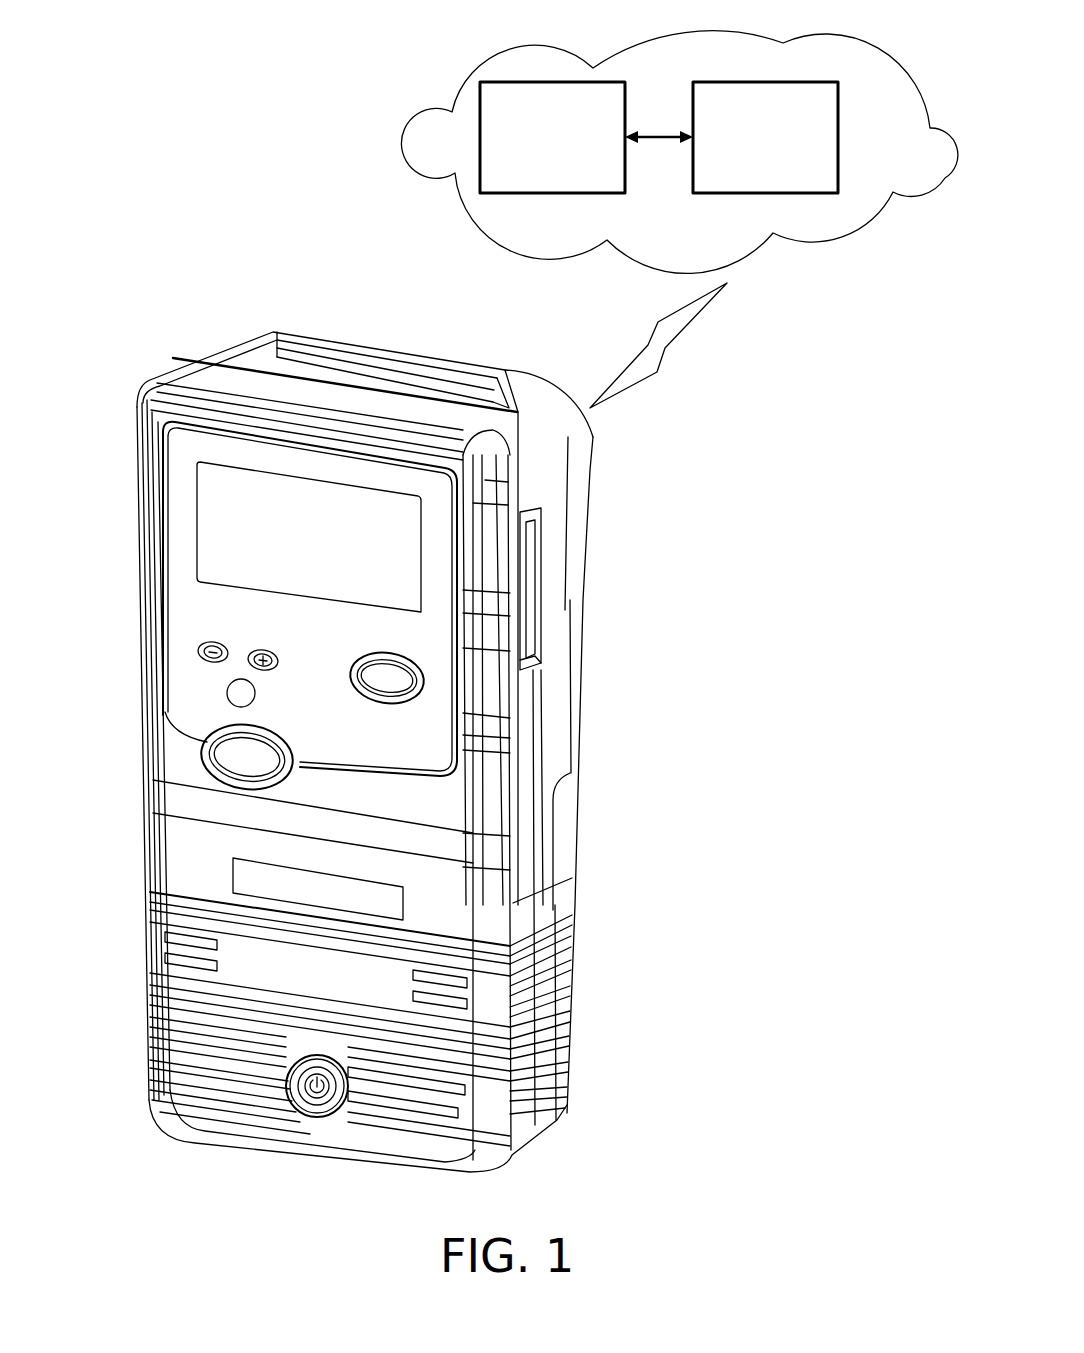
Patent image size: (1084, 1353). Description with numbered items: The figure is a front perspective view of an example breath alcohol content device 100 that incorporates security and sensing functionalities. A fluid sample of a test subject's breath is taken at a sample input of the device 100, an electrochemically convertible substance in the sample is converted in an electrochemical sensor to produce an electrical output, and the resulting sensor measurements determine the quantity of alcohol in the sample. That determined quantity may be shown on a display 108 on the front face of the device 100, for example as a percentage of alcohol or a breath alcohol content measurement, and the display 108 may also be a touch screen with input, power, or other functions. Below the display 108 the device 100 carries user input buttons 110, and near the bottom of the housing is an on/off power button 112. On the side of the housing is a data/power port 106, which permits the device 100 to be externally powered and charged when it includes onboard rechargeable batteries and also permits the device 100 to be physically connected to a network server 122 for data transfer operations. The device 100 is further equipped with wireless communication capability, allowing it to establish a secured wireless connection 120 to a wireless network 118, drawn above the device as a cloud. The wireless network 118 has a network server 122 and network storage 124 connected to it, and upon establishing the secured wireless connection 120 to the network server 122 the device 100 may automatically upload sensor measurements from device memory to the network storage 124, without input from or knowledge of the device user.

The breath alcohol content device 100 is at (163, 314).
The data/power port 106 is at (560, 641).
The display 108 is at (290, 556).
The user input buttons 110 is at (232, 620).
The on/off power button 112 is at (316, 1080).
The wireless network 118 is at (699, 261).
The secured wireless connection 120 is at (667, 360).
The network server 122 is at (745, 178).
The network storage 124 is at (532, 178).